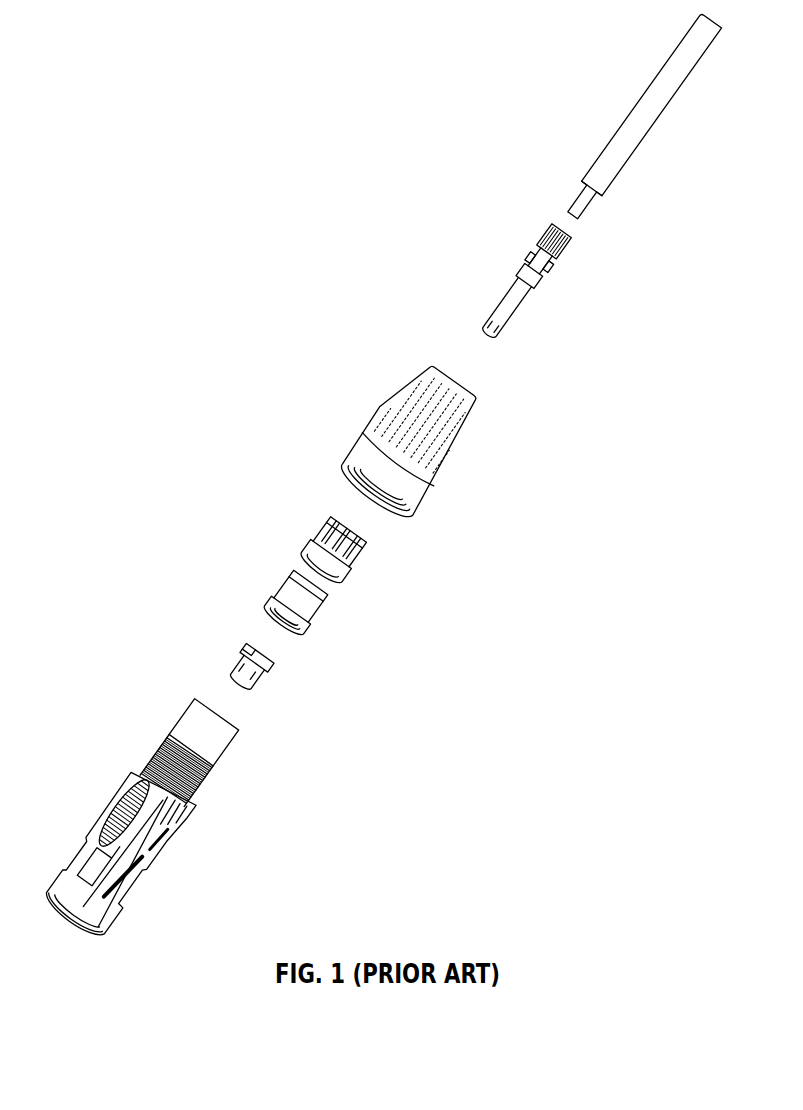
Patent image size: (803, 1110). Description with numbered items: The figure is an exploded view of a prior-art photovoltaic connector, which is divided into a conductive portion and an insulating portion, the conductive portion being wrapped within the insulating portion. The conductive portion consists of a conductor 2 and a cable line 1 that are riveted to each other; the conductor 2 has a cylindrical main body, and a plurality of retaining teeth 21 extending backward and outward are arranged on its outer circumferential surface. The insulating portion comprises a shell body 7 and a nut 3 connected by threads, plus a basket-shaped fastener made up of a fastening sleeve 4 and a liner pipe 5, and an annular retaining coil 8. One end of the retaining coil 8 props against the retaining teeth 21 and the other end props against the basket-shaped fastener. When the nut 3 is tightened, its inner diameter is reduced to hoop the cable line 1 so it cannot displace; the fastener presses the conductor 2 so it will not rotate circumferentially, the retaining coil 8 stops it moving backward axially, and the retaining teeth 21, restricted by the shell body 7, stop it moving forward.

The cable line 1 is at (618, 130).
The conductor 2 is at (495, 286).
The retaining teeth 21 is at (552, 278).
The nut 3 is at (373, 402).
The fastening sleeve 4 is at (313, 523).
The liner pipe 5 is at (330, 618).
The shell body 7 is at (235, 762).
The retaining coil 8 is at (230, 655).